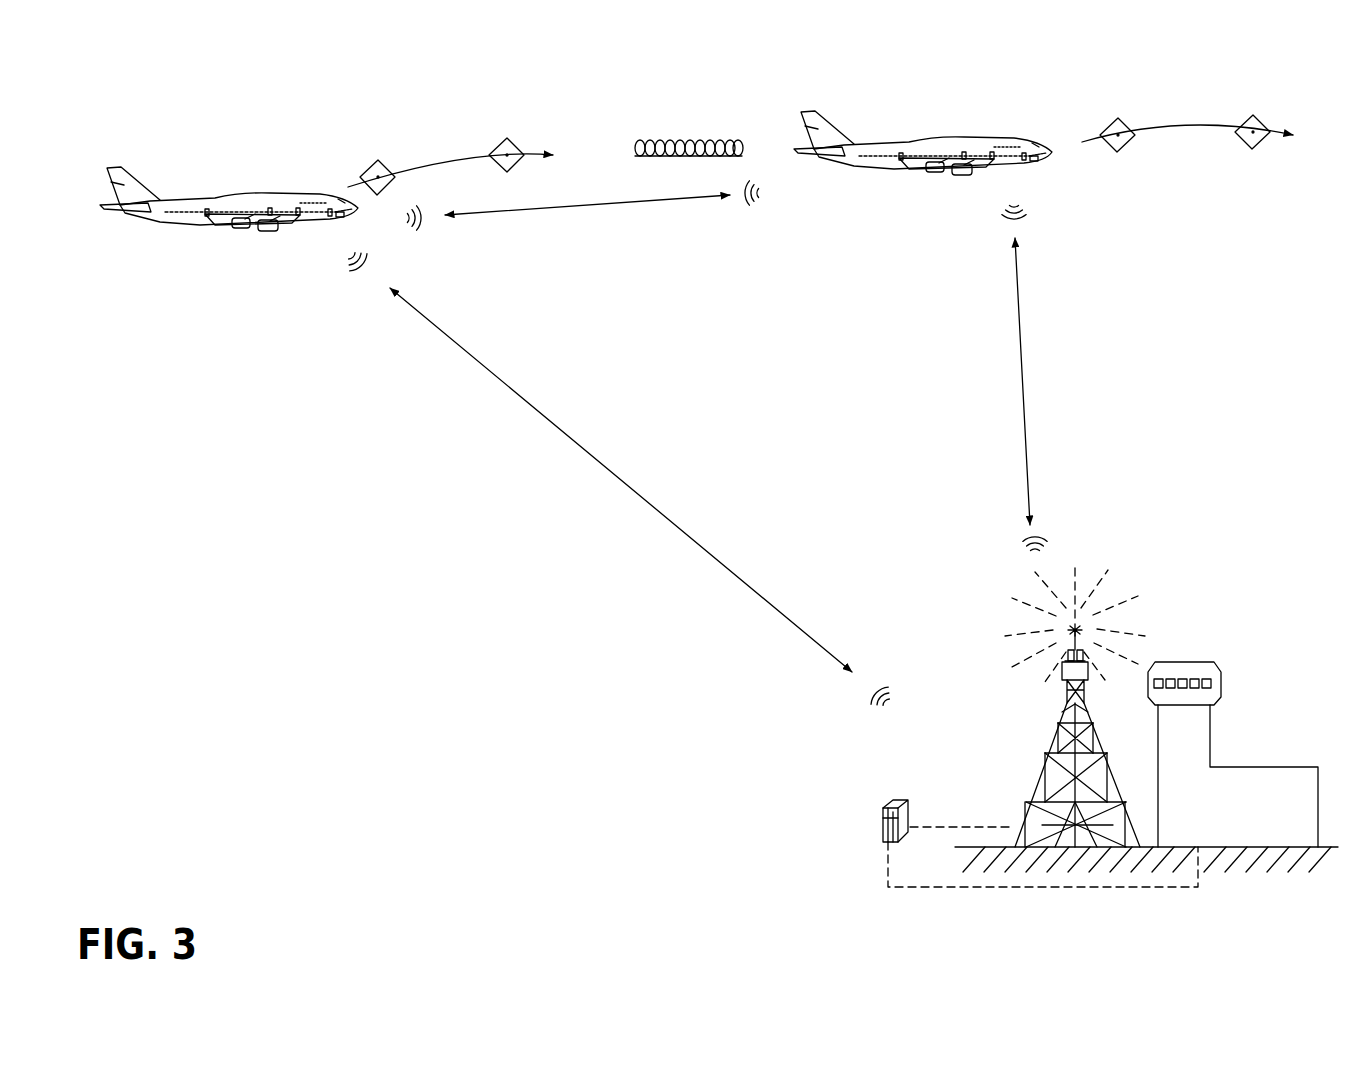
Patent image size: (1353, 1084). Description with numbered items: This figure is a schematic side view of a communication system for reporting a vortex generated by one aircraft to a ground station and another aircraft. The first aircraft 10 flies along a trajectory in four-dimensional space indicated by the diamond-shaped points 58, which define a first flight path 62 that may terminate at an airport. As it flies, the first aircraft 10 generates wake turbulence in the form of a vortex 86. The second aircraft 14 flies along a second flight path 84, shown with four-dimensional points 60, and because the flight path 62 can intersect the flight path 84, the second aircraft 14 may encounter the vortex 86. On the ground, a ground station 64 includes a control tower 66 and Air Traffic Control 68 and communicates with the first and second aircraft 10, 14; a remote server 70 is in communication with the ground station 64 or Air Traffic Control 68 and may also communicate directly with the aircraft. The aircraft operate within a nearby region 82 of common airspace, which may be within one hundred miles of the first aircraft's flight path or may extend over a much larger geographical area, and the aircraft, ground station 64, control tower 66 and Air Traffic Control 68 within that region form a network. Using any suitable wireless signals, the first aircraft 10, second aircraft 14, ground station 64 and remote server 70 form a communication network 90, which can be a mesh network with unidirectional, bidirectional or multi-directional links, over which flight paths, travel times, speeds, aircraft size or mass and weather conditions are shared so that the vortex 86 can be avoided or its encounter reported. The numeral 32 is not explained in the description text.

The first aircraft 10 is at (928, 138).
The second aircraft 14 is at (227, 190).
The aircraft communication system 32 is at (331, 220).
The diamond-shaped points 58 is at (1108, 122).
The 4D points 60 is at (362, 172).
The first flight path 62 is at (1178, 122).
The ground station 64 is at (1230, 623).
The control tower 66 is at (1035, 778).
The Air Traffic Control 68 is at (1267, 767).
The remote server 70 is at (893, 807).
The nearby region 82 is at (810, 391).
The second flight path 84 is at (428, 162).
The vortex 86 is at (670, 140).
The communication network 90 is at (612, 207).